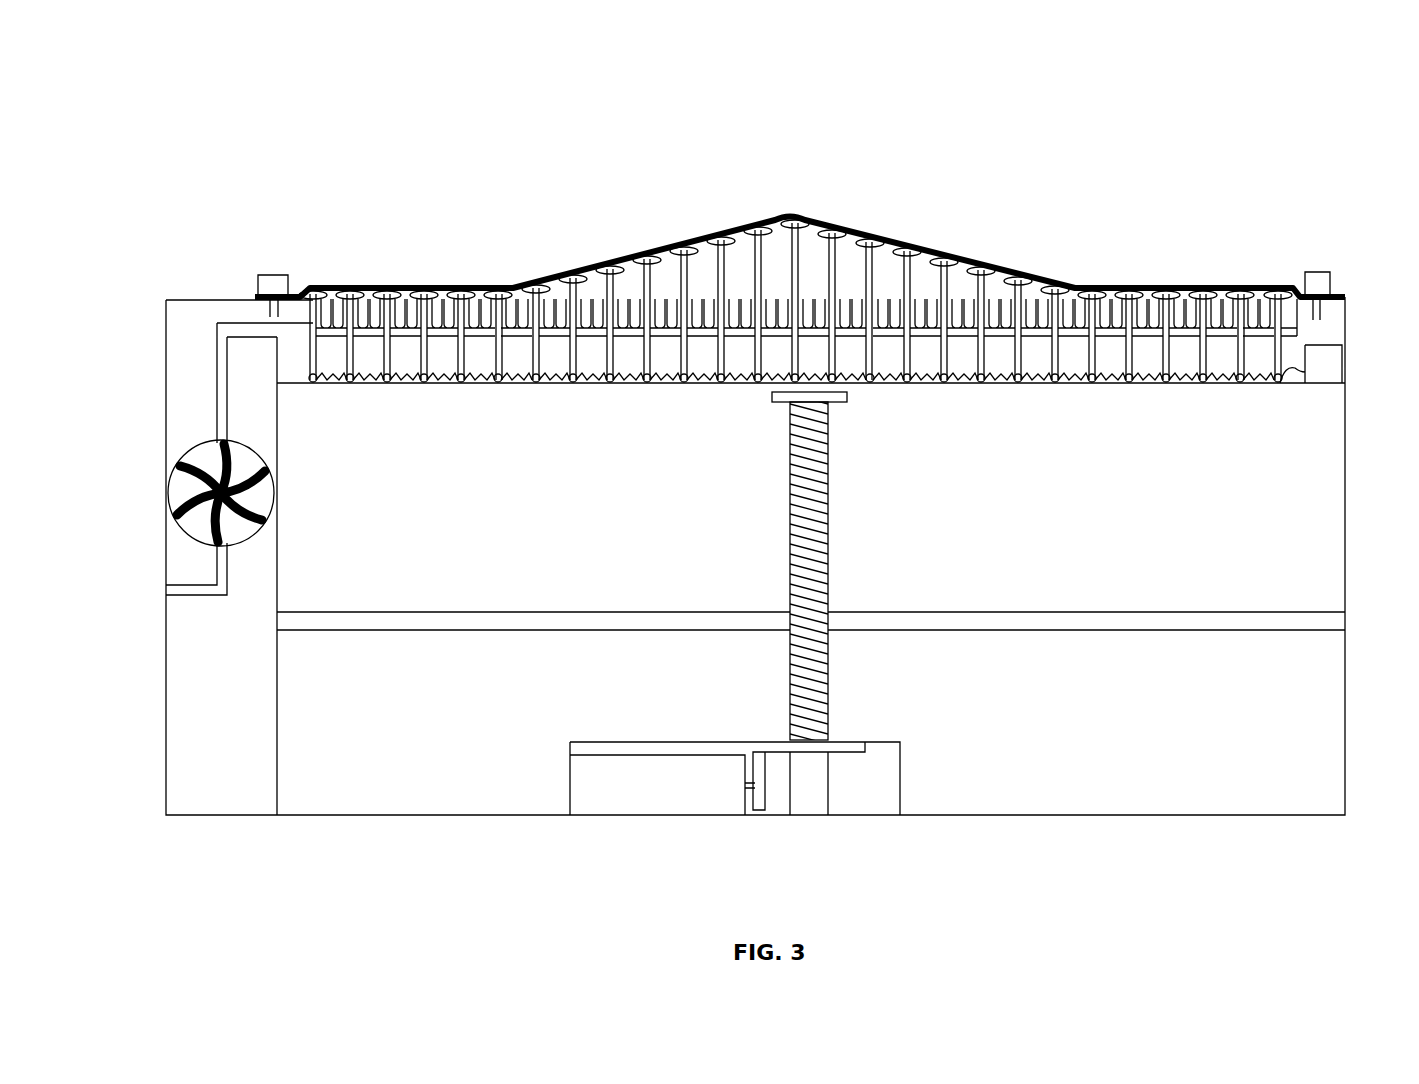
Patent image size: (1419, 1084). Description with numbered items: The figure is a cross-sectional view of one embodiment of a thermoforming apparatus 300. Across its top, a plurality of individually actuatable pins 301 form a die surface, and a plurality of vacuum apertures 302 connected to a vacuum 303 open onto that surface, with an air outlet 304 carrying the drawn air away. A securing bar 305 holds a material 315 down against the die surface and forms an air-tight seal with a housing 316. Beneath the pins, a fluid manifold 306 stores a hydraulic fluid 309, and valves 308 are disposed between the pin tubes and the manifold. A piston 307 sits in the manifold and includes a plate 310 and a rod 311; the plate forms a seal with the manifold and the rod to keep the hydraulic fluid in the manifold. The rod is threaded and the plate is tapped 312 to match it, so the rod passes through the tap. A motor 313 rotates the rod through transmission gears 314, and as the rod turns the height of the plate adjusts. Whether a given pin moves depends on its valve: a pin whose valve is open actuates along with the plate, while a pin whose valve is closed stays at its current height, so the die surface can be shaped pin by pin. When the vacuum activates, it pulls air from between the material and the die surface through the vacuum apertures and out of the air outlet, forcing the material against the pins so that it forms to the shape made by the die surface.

The thermoforming apparatus 300 is at (250, 87).
The individually actuatable pins 301 is at (717, 265).
The vacuum apertures 302 is at (330, 313).
The vacuum 303 is at (182, 442).
The air outlet 304 is at (156, 604).
The securing bar 305 is at (1305, 273).
The fluid manifold 306 is at (1345, 488).
The piston 307 is at (734, 575).
The valves 308 is at (464, 395).
The hydraulic fluid 309 is at (528, 532).
The plate 310 is at (975, 612).
The rod 311 is at (830, 476).
The tap 312 is at (845, 628).
The motor 313 is at (680, 799).
The transmission gears 314 is at (781, 766).
The material 315 is at (1108, 290).
The housing 316 is at (228, 298).